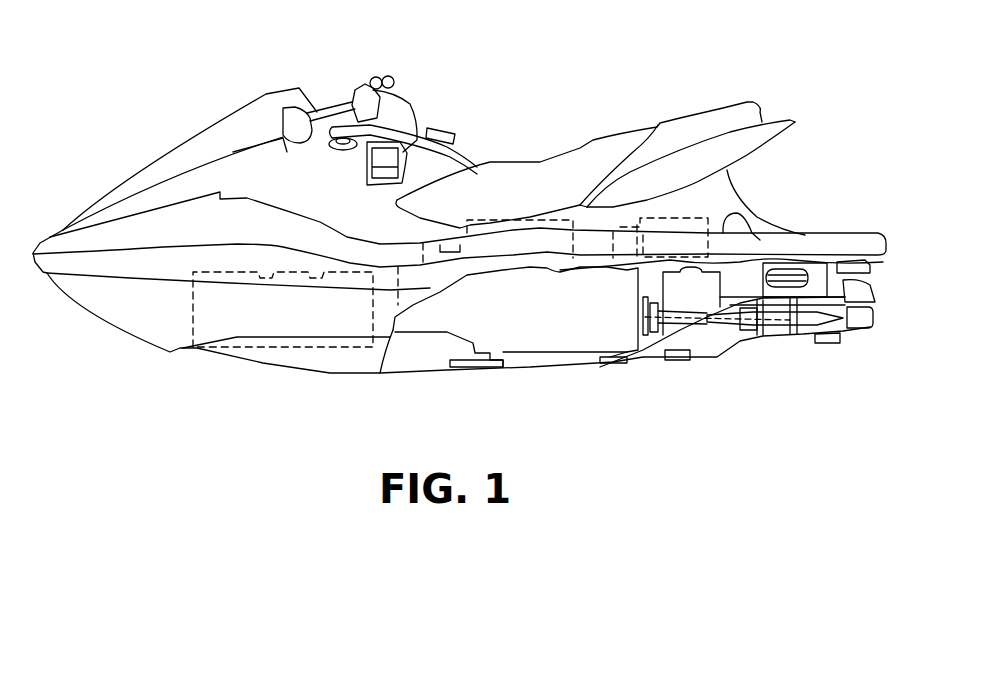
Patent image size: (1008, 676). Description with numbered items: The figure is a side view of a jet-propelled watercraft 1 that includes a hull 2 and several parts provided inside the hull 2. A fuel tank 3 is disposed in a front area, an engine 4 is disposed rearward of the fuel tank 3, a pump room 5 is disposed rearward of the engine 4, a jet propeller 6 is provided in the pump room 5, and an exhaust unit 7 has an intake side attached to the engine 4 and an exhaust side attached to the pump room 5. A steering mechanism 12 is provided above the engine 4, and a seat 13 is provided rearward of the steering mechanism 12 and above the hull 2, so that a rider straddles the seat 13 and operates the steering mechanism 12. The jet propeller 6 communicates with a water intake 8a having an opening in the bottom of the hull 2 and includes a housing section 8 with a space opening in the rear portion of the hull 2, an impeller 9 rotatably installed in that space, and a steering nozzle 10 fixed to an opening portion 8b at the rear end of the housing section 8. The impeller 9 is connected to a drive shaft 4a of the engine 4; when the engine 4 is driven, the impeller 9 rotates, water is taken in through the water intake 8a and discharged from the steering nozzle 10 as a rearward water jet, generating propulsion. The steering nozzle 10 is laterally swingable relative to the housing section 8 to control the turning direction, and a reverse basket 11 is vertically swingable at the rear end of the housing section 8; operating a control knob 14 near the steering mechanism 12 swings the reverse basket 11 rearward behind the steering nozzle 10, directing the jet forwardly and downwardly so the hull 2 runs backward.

The jet-propelled watercraft 1 is at (273, 55).
The hull 2 is at (207, 143).
The fuel tank 3 is at (260, 330).
The engine 4 is at (537, 340).
The drive shaft 4a is at (660, 360).
The pump room 5 is at (748, 343).
The jet propeller 6 is at (720, 347).
The exhaust unit 7 is at (770, 223).
The housing section 8 is at (713, 337).
The water intake 8a is at (677, 358).
The opening portion 8b is at (827, 350).
The impeller 9 is at (783, 353).
The steering nozzle 10 is at (867, 327).
The reverse basket 11 is at (880, 280).
The steering mechanism 12 is at (397, 77).
The seat 13 is at (577, 163).
The control knob 14 is at (420, 105).